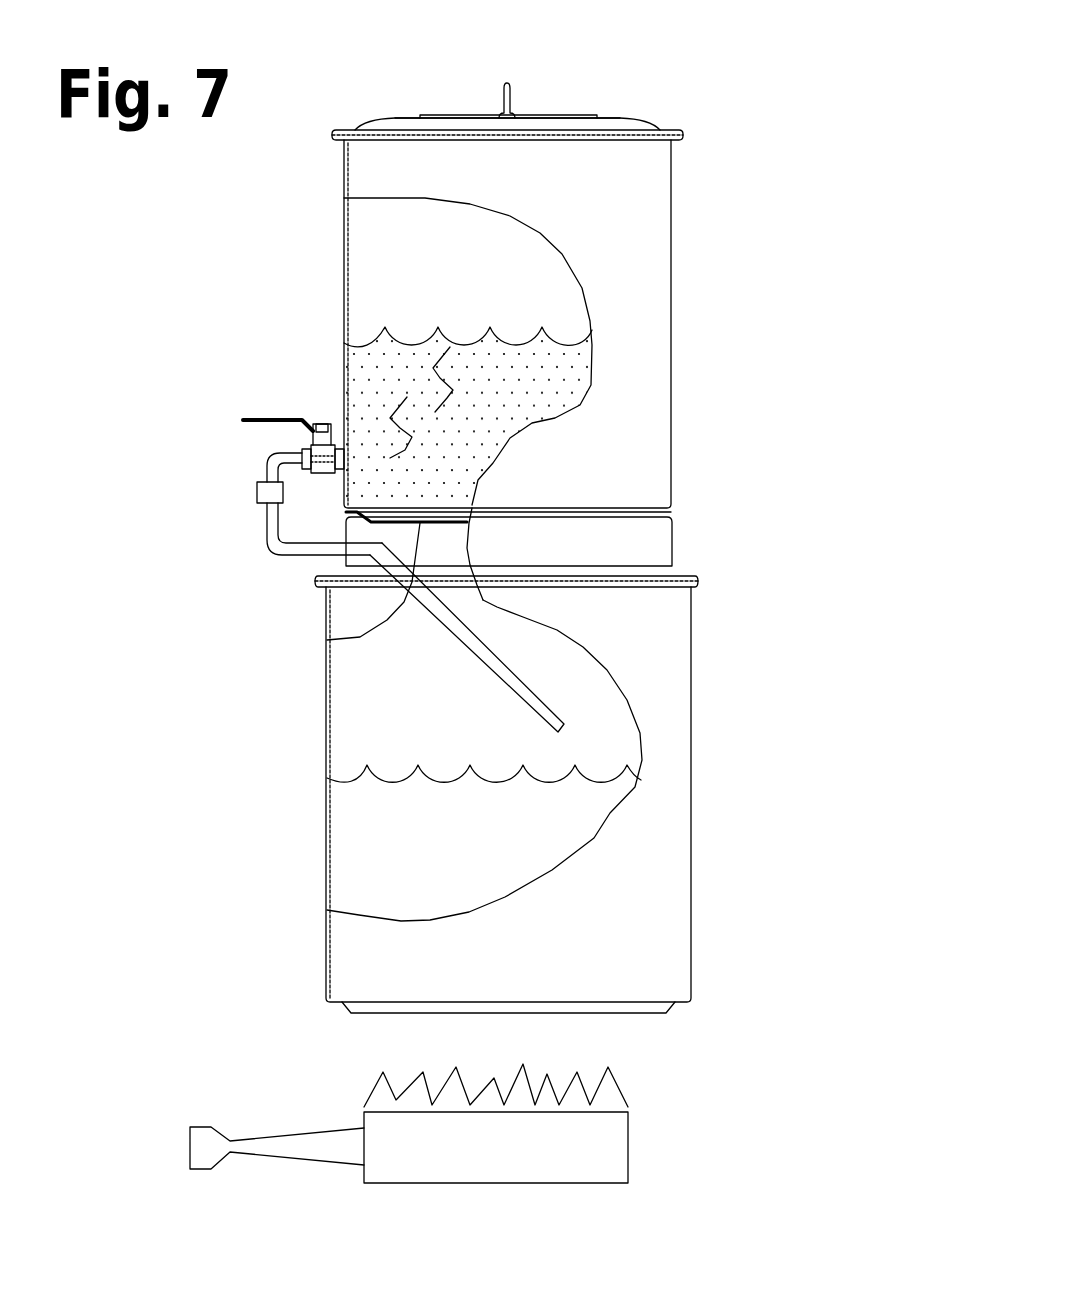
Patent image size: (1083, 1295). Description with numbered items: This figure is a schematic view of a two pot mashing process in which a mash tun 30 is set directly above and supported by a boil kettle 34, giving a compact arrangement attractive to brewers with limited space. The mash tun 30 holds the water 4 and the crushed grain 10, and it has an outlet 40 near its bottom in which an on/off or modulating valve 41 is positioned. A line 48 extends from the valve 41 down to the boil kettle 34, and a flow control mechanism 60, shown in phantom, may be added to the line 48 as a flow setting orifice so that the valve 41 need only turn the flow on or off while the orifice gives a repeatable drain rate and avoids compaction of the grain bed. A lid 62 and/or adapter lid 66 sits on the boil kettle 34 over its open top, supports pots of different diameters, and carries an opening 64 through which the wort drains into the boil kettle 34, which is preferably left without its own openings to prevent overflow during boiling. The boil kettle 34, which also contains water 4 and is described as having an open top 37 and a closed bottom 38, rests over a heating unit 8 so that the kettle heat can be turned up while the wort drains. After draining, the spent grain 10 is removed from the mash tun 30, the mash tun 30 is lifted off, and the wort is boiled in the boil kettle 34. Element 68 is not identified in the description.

The water 4 is at (440, 378).
The heating unit 8 is at (573, 1147).
The crushed grain 10 is at (400, 428).
The mash tun 30 is at (671, 297).
The boil kettle 34 is at (692, 797).
The open top 37 is at (640, 132).
The closed bottom 38 is at (326, 640).
The outlet 40 is at (333, 432).
The on/off or modulating valve 41 is at (300, 443).
The line 48 is at (267, 520).
The flow control mechanism 60 is at (257, 497).
The lid 62 is at (680, 578).
The opening 64 is at (472, 640).
The adapter lid 66 is at (672, 548).
The drain passage 68 is at (345, 553).